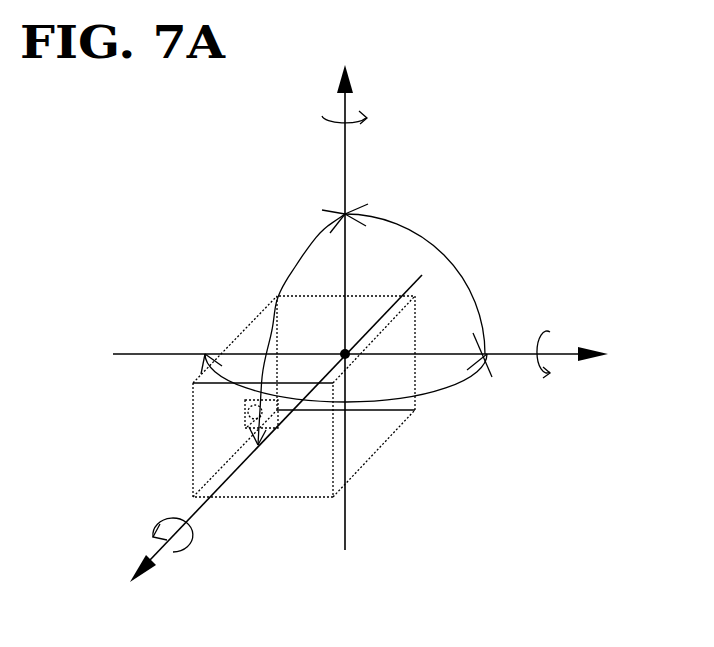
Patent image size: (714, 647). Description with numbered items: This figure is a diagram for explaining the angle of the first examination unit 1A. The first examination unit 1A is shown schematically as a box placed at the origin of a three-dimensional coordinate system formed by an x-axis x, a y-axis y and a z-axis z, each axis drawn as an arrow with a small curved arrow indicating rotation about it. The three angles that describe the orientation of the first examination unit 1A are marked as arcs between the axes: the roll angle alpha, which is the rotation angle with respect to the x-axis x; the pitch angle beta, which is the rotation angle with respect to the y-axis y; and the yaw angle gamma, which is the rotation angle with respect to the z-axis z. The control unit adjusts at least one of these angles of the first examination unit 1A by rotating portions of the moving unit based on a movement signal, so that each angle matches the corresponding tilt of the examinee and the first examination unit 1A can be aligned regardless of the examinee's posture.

The first examination unit 1A is at (193, 438).
The x-axis x is at (261, 447).
The y-axis y is at (377, 354).
The z-axis z is at (344, 286).